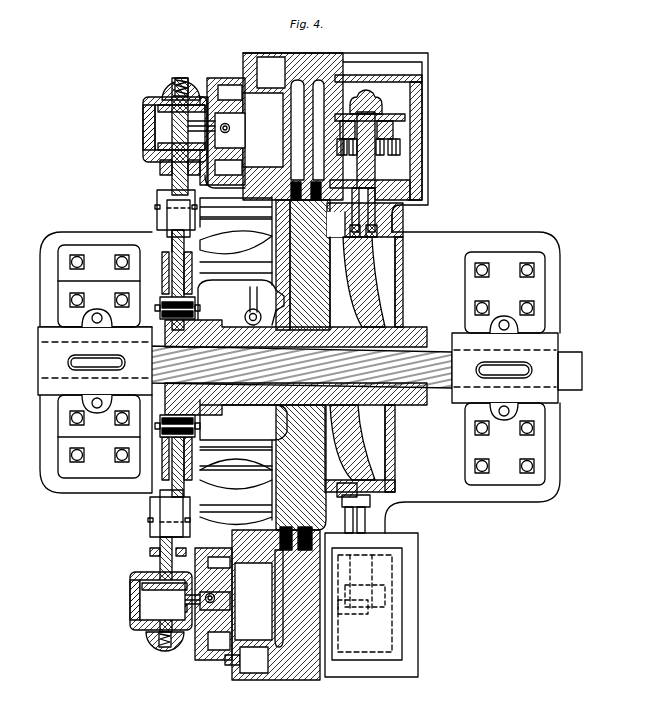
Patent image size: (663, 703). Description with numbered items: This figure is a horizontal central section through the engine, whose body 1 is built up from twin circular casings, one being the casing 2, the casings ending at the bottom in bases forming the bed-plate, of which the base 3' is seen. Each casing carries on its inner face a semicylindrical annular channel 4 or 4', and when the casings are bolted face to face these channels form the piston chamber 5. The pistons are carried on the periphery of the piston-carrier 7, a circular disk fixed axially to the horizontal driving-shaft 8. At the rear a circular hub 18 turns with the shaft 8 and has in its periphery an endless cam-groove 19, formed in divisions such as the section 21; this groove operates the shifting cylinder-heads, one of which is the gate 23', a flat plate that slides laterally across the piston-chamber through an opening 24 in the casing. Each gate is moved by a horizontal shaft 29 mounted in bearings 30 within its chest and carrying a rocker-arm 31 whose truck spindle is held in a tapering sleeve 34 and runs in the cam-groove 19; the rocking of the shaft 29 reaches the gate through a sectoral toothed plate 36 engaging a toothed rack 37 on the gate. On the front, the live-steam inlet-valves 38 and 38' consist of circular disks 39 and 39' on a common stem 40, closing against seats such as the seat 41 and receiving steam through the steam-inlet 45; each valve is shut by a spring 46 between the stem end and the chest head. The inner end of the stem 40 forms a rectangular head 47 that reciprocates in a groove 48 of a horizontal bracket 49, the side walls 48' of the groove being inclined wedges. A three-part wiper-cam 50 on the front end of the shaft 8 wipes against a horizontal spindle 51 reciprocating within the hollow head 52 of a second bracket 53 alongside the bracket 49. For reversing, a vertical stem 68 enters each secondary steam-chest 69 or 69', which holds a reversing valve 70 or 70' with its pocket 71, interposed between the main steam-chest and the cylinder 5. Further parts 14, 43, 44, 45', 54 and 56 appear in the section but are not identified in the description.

The body of the engine 1 is at (335, 135).
The circular casing 2 is at (293, 119).
The sleeve 34 is at (312, 56).
The semicylindrical annular channel 4 is at (297, 140).
The semicylindrical annular channel 4' is at (317, 140).
The piston chamber 5 is at (302, 396).
The shifting gate 23' is at (366, 135).
The bearings 30 is at (407, 118).
The sectoral toothed plate 36 is at (395, 137).
The toothed rack 37 is at (400, 150).
The horizontal shaft 29 is at (363, 196).
The rocker-arm 31 is at (378, 231).
The cam-groove 19 is at (365, 220).
The hub 18 is at (364, 364).
The piston-carrier 7 is at (302, 298).
The cam-groove section 21 is at (304, 467).
The connection 14 is at (370, 490).
The driving-shaft 8 is at (239, 349).
The base 3' is at (310, 382).
The secondary steam-chest 69 is at (222, 118).
The reversing valve 70 is at (230, 72).
The valve pocket 71 is at (227, 143).
The vertical stem 68 is at (230, 127).
The valve disk 39 is at (174, 117).
The spring 46 is at (181, 76).
The valve-stem 40 is at (152, 105).
The live-steam inlet-valve 38 is at (158, 112).
The steam-inlet 45 is at (131, 362).
The lower plate 44 is at (165, 136).
The foot 43 is at (160, 150).
The rod 45' is at (193, 363).
The coupling block 56 is at (162, 204).
The groove 48 is at (159, 368).
The side walls 48' is at (196, 361).
The rectangular head 47 is at (165, 228).
The horizontal bracket 49 is at (236, 356).
The second horizontal bracket 53 is at (236, 363).
The sleeve 54 is at (162, 272).
The hollow head 52 is at (163, 285).
The horizontal spindle 51 is at (179, 363).
The wiper-cam 50 is at (193, 313).
The secondary steam-chest 69' is at (216, 615).
The reversing valve 70' is at (236, 603).
The opening 24 is at (274, 681).
The valve disk 39' is at (148, 609).
The live-steam inlet-valve 38' is at (146, 593).
The valve seat 41 is at (160, 575).